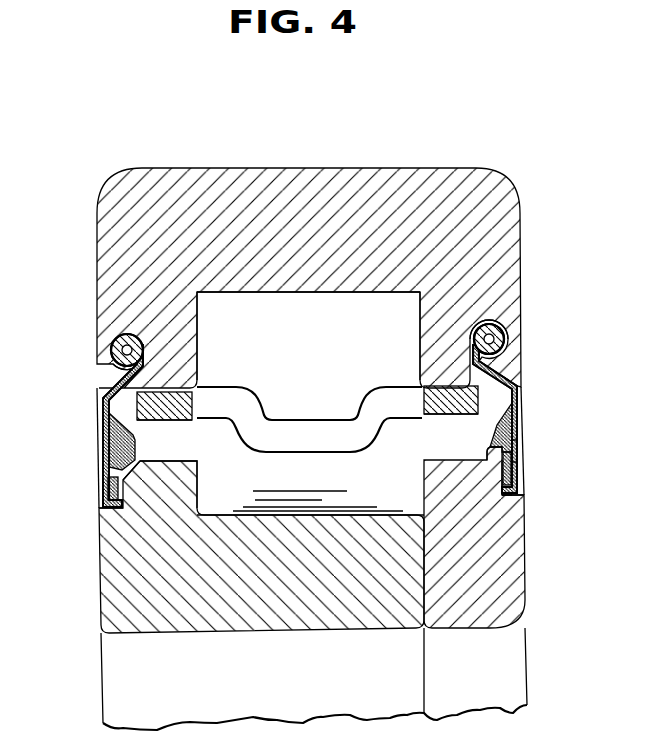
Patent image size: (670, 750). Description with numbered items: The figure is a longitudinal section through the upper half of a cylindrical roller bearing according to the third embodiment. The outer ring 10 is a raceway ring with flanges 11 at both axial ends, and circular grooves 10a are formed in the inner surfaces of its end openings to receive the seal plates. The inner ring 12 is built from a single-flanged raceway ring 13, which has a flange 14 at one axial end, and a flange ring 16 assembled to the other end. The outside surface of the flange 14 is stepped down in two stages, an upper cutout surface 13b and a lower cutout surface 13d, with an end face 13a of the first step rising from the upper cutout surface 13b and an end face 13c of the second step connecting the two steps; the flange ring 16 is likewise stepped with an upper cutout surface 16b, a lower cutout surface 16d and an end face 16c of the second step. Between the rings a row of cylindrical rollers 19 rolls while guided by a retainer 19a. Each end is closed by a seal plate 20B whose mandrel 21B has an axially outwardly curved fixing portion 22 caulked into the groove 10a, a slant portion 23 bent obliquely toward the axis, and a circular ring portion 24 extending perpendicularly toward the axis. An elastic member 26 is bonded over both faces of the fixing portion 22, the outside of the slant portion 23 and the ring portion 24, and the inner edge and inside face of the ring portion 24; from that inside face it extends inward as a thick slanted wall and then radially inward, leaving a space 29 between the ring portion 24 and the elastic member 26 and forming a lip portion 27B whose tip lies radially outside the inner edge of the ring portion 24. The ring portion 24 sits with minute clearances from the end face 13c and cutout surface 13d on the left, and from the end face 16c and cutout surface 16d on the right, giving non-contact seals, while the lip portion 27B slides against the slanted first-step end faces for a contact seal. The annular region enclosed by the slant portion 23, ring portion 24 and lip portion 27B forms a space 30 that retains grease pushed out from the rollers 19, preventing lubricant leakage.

The outer ring 10 is at (292, 176).
The flange 11 is at (172, 355).
The circular groove 10a is at (118, 328).
The cylindrical roller 19 is at (350, 305).
The retainer 19a is at (302, 433).
The seal plate 20B is at (98, 443).
The fixing portion 22 is at (505, 343).
The slant portion 23 is at (504, 374).
The space 30 is at (102, 397).
The mandrel 21B is at (518, 409).
The circular ring portion 24 is at (505, 432).
The elastic member 26 is at (518, 452).
The space 29 is at (104, 472).
The lip portion 27B is at (136, 474).
The flange 14 is at (195, 456).
The single-flanged raceway ring 13 is at (321, 630).
The end face of the first step 13a is at (152, 484).
The upper cutout surface 13b is at (124, 508).
The end face of the second step 13c is at (128, 510).
The lower cutout surface 13d is at (100, 521).
The flange ring 16 is at (473, 630).
The lower cutout surface 16d is at (482, 455).
The upper cutout surface 16b is at (487, 497).
The end face of the second step 16c is at (497, 497).
The inner ring 12 is at (237, 634).